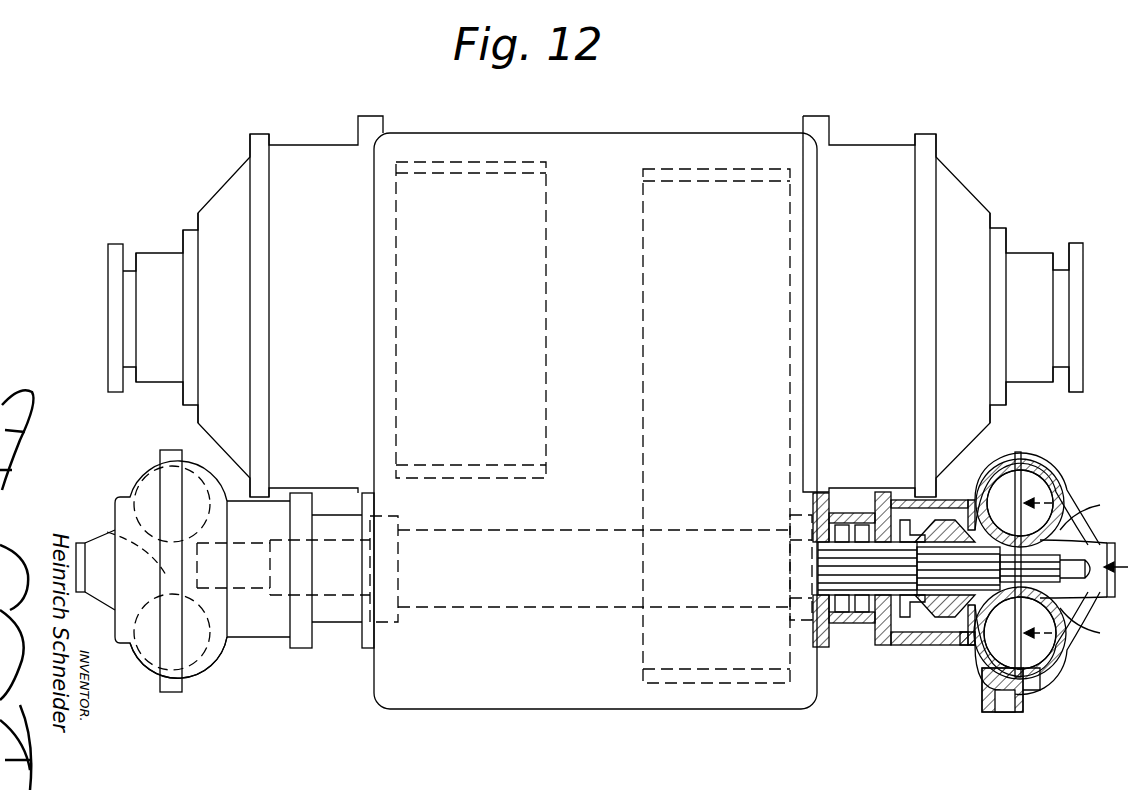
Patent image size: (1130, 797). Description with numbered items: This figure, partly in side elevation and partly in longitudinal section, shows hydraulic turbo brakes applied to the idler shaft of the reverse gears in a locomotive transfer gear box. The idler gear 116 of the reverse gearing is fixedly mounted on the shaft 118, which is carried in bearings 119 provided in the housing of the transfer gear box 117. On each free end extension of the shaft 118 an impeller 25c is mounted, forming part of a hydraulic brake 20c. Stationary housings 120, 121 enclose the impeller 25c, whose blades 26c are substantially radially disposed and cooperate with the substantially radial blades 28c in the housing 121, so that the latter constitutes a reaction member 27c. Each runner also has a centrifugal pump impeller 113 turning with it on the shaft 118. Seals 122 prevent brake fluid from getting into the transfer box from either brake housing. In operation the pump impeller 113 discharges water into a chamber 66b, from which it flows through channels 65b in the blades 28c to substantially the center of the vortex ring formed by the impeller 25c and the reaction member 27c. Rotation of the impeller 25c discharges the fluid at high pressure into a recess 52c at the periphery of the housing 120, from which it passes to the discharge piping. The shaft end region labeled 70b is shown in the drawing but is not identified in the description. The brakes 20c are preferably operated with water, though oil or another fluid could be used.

The hydraulic brake 20c is at (114, 538).
The impeller 25c is at (208, 660).
The blades 26c is at (987, 690).
The reaction member 27c is at (1060, 655).
The blades 28c is at (1042, 693).
The recess 52c is at (1005, 703).
The channels 65b is at (1048, 667).
The chamber 66b is at (1070, 628).
The shaft end 70b is at (1107, 588).
The centrifugal pump impeller 113 is at (1062, 530).
The idler gear 116 is at (712, 683).
The transfer gear box 117 is at (541, 710).
The shaft 118 is at (857, 598).
The bearings 119 is at (385, 622).
The stationary housing 120 is at (993, 458).
The stationary housing 121 is at (1023, 467).
The seals 122 is at (933, 640).